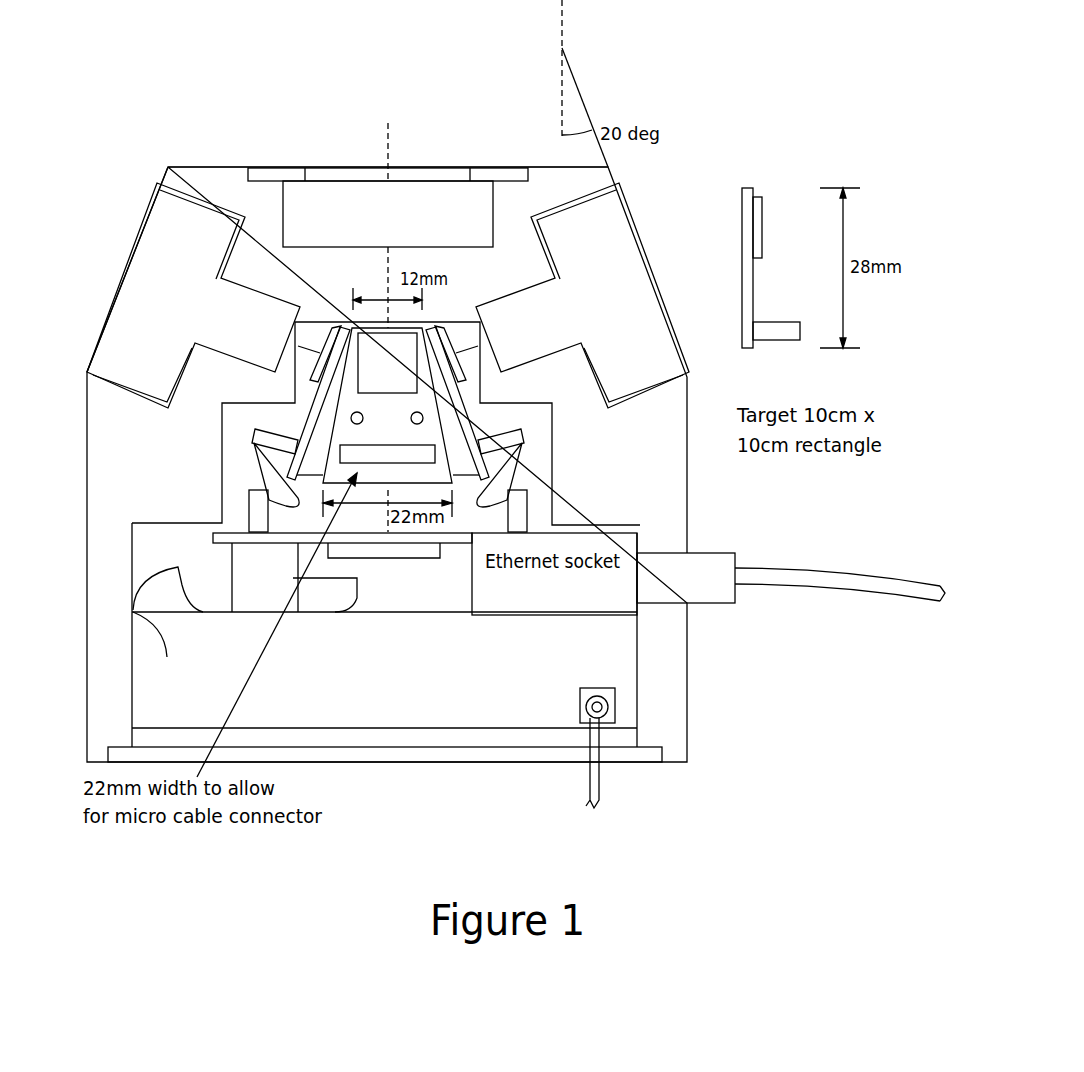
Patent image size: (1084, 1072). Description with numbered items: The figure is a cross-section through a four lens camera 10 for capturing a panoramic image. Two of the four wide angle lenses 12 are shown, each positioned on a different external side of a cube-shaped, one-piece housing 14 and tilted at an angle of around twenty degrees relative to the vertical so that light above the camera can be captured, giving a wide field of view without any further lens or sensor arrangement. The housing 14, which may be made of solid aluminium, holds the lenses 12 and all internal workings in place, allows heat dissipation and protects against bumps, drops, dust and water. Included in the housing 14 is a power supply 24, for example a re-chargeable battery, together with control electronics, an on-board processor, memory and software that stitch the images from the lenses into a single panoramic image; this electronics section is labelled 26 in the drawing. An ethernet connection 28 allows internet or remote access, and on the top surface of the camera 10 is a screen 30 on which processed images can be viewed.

The four lens camera 10 is at (214, 104).
The wide angle lens 12 is at (132, 283).
The housing 14 is at (668, 498).
The power supply 24 is at (659, 754).
The electronics for processing images 26 is at (642, 657).
The ethernet connection 28 is at (682, 577).
The screen 30 is at (343, 177).